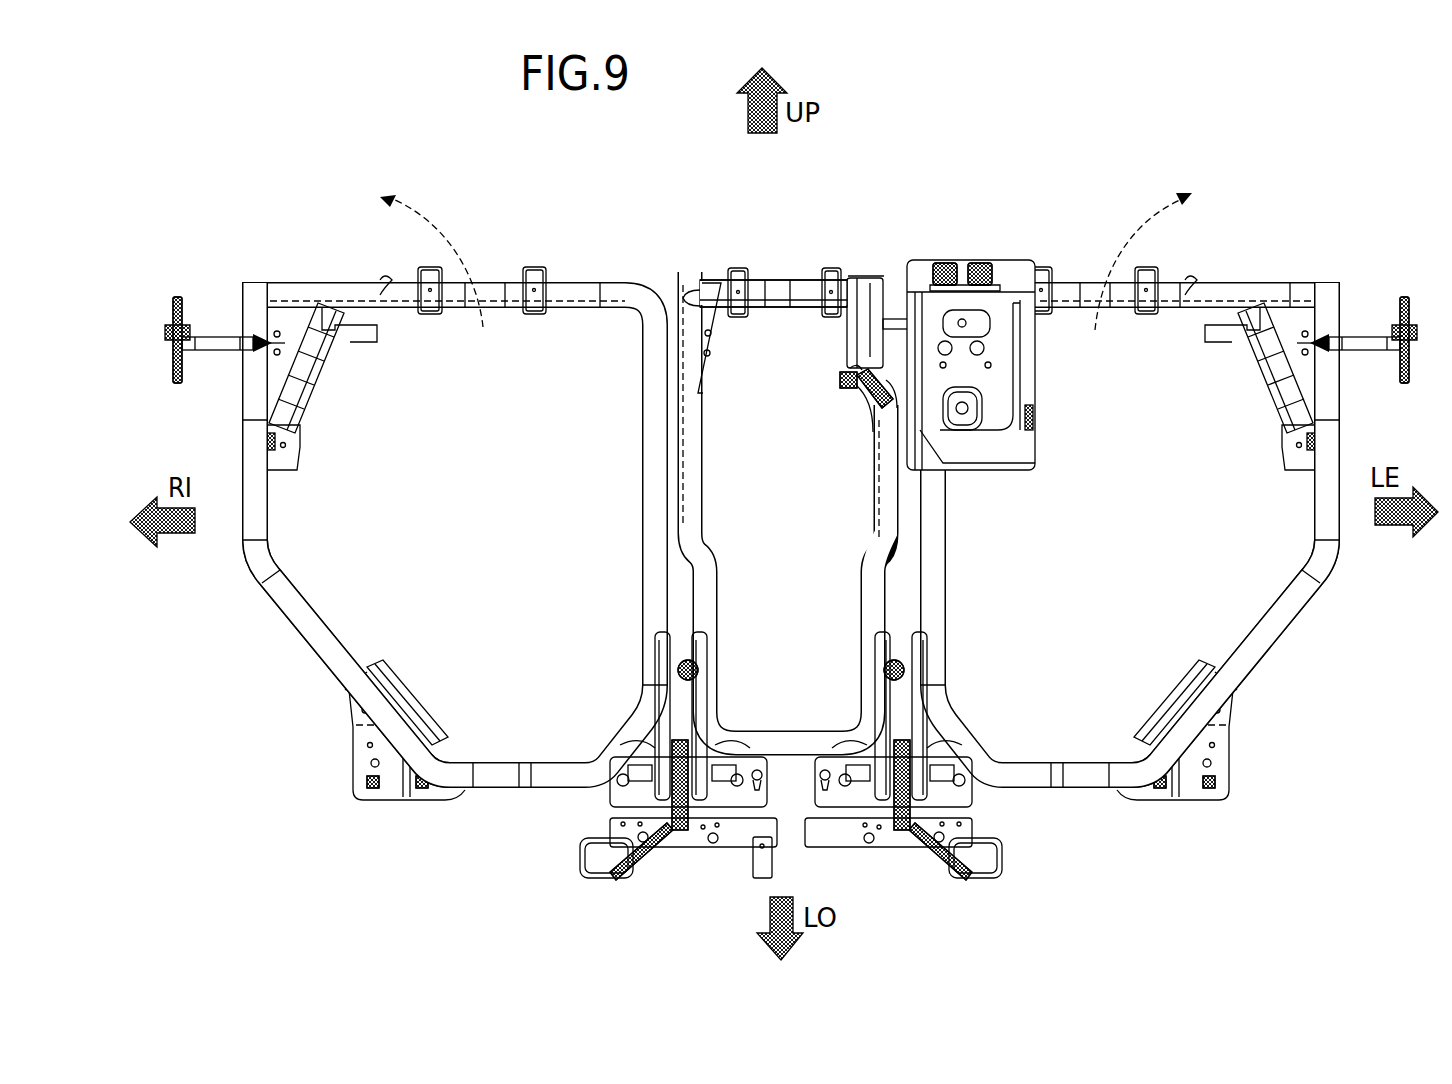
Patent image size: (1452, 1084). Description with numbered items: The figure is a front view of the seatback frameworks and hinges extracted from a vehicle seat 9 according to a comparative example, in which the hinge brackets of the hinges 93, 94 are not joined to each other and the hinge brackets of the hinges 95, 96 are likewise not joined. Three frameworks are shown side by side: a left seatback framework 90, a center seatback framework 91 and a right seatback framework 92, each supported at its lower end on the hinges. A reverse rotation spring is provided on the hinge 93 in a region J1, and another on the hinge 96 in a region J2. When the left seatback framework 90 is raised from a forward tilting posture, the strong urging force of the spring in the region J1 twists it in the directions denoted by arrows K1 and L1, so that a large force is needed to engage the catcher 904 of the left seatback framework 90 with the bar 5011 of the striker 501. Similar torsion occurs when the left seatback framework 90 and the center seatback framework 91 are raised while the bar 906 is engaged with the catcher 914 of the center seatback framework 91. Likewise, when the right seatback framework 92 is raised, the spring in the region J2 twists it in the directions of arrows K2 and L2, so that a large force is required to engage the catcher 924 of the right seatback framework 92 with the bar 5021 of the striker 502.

The vehicle seat 9 is at (1245, 142).
The left seatback framework 90 is at (1176, 283).
The center seatback framework 91 is at (782, 292).
The right seatback framework 92 is at (495, 285).
The hinge 93 is at (945, 848).
The hinge 94 is at (850, 847).
The hinge 95 is at (718, 850).
The hinge 96 is at (605, 847).
The striker 501 is at (1408, 318).
The striker 502 is at (168, 312).
The catcher 904 is at (1325, 276).
The bar 906 is at (894, 296).
The catcher 914 is at (858, 262).
The catcher 924 is at (246, 278).
The bar 5011 is at (1359, 326).
The bar 5021 is at (211, 326).
The arrow L1 is at (1269, 368).
The arrow L2 is at (311, 368).
The region J1 is at (990, 796).
The region J2 is at (600, 796).